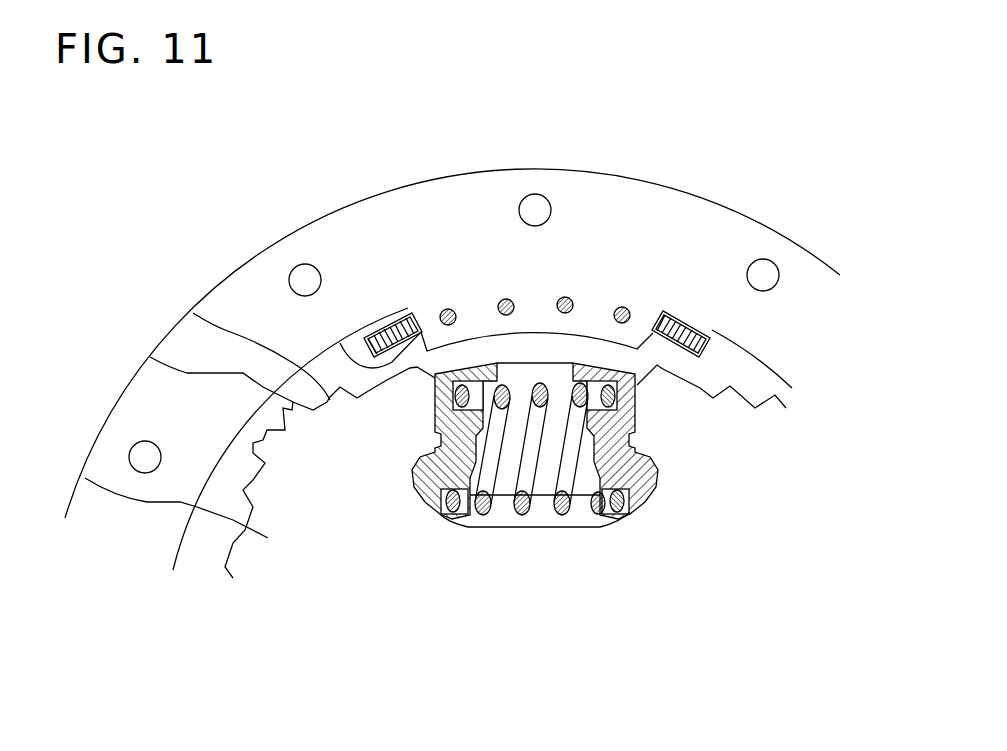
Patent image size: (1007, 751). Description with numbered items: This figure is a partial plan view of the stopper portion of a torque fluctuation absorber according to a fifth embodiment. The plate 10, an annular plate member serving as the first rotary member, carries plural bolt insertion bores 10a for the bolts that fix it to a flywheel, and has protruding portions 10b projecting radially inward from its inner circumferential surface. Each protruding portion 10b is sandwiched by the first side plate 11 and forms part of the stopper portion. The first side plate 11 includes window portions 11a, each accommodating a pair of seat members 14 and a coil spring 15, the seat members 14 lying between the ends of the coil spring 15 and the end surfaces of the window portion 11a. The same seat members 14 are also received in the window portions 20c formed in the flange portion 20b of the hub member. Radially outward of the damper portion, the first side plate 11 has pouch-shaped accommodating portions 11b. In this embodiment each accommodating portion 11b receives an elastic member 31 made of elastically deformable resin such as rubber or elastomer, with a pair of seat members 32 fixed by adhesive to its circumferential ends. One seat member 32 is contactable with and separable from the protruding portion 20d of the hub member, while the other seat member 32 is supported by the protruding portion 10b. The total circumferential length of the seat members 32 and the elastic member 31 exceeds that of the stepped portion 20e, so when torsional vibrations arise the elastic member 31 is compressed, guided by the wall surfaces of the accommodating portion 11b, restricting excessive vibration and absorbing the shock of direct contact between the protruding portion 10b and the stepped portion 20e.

The plate 10 is at (133, 417).
The bolt insertion bores 10a is at (770, 260).
The protruding portions 10b is at (600, 307).
The first side plate 11 is at (488, 350).
The window portions 11a is at (538, 362).
The accommodating portions 11b is at (340, 343).
The seat members 14 is at (427, 495).
The coil spring 15 is at (562, 515).
The flange portion 20b is at (85, 478).
The window portions 20c is at (518, 523).
The protruding portions 20d is at (150, 357).
The stepped portion 20e is at (193, 313).
The elastic member 31 is at (340, 347).
The seat members 32 is at (365, 338).